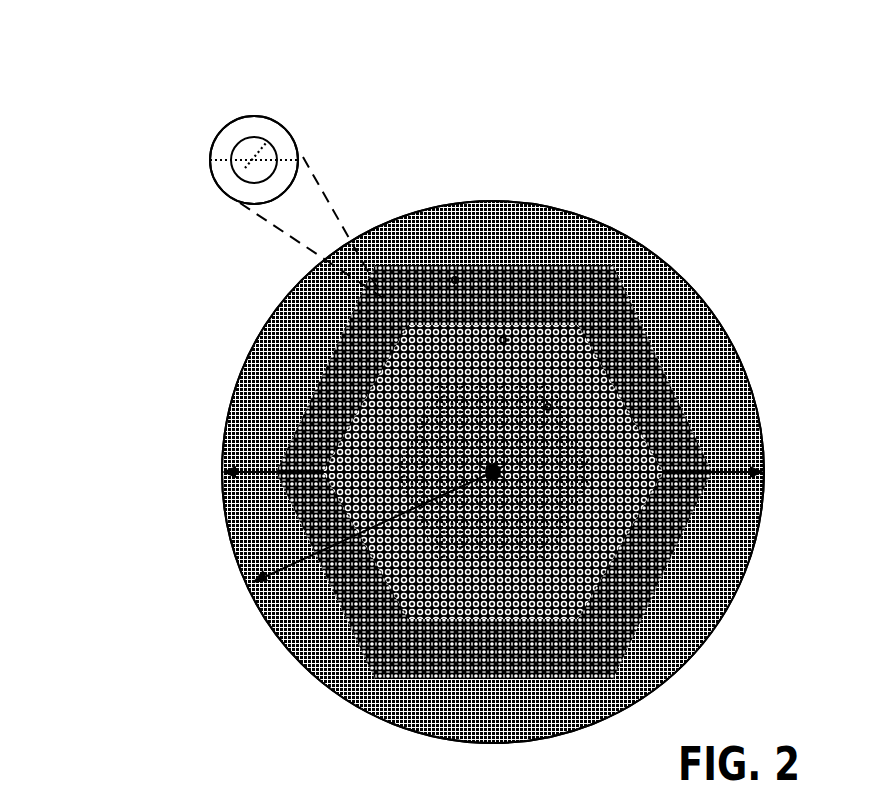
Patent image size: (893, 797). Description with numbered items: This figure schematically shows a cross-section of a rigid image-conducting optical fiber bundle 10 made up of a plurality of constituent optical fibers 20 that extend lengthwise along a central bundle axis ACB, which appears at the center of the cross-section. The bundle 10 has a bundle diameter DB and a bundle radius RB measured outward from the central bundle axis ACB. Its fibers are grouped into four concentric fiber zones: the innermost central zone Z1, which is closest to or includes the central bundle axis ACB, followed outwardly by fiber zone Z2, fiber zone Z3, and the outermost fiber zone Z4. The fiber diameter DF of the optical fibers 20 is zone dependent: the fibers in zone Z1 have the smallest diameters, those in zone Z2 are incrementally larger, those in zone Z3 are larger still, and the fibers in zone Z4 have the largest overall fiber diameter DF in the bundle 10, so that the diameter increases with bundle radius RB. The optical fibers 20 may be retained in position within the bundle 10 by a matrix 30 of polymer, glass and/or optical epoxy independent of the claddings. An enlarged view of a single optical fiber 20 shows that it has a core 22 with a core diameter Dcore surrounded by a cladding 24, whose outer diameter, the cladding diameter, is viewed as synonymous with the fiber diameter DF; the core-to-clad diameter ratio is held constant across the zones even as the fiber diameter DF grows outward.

The optical fiber bundle 10 is at (715, 337).
The optical fiber 20 is at (548, 407).
The core 22 is at (250, 143).
The cladding 24 is at (235, 130).
The matrix 30 is at (668, 550).
The first fiber zone Z1 is at (448, 405).
The second fiber zone Z2 is at (398, 395).
The third fiber zone Z3 is at (328, 393).
The fourth fiber zone Z4 is at (252, 432).
The bundle diameter DB is at (728, 468).
The bundle radius RB is at (301, 563).
The central bundle axis ACB is at (493, 472).
The fiber diameter DF is at (285, 157).
The core diameter Dcore is at (248, 165).